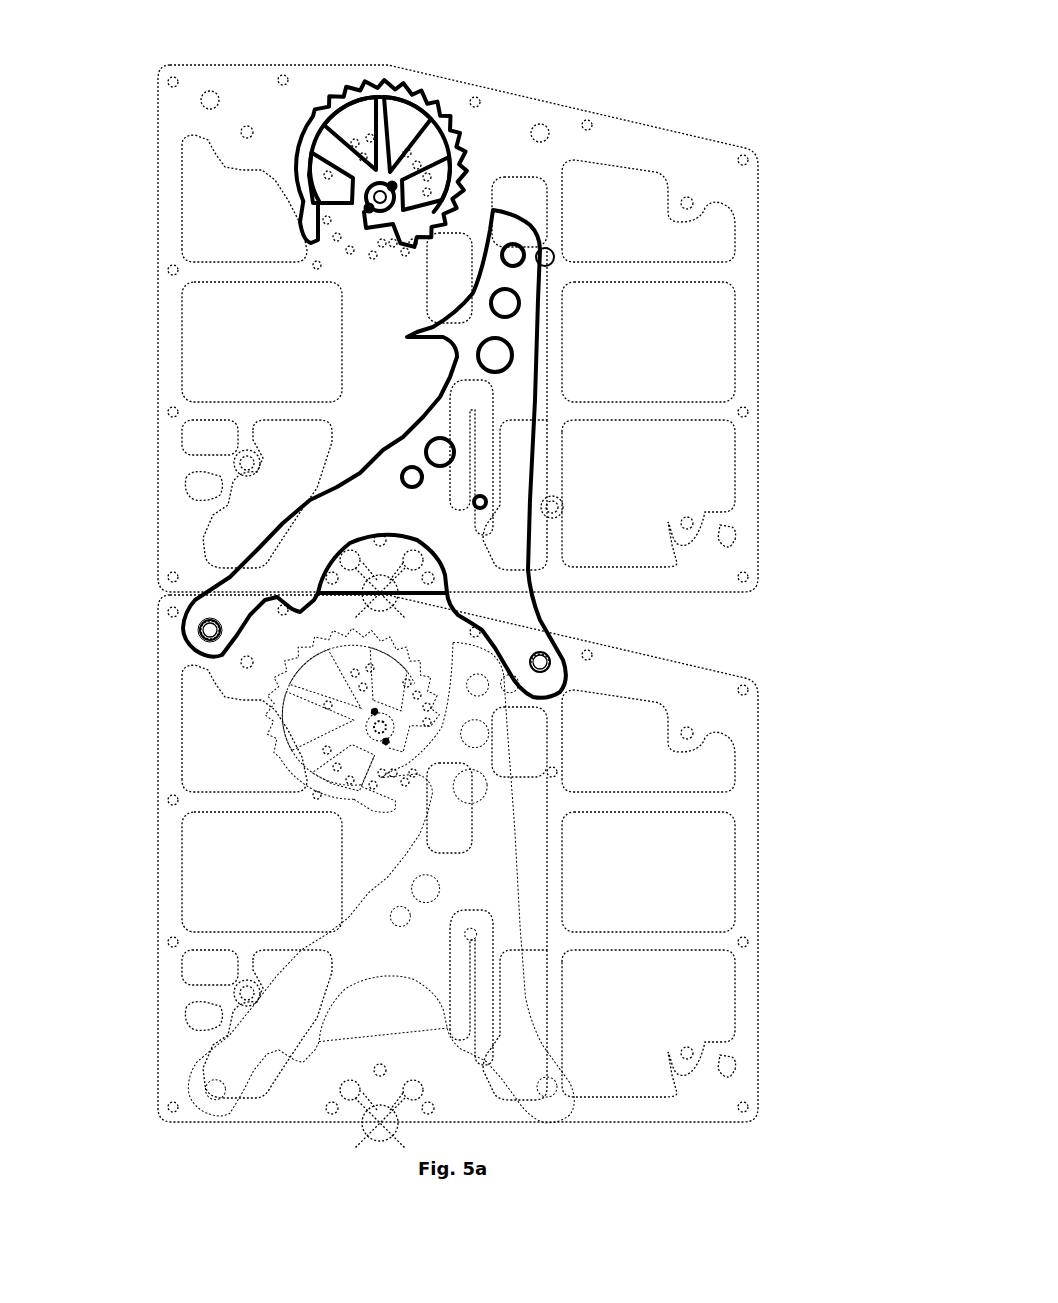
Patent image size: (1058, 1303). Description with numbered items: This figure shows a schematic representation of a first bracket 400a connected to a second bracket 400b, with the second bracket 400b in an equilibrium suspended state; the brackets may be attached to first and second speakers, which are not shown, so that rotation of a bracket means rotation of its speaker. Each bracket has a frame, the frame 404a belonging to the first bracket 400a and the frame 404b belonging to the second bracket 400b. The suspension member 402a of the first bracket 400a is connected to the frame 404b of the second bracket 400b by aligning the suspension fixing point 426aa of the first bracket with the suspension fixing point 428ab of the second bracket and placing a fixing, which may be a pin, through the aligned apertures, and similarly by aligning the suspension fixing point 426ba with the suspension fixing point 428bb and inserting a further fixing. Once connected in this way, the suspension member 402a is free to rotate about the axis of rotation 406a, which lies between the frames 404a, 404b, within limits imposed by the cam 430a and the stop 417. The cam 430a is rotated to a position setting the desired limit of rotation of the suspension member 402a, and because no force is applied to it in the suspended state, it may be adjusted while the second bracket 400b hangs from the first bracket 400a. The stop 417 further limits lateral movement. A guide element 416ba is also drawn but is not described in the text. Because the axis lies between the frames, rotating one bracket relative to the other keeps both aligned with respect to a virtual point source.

The first bracket 400a is at (693, 125).
The second bracket 400b is at (715, 693).
The frame of the first bracket 404a is at (728, 192).
The frame of the second bracket 404b is at (723, 763).
The cam 430a is at (277, 165).
The axis of rotation 406a is at (353, 625).
The stop 417 is at (549, 252).
The guide pin 416ba is at (547, 538).
The suspension member 402a is at (223, 602).
The suspension fixing point 426aa is at (173, 670).
The suspension fixing point 428ab is at (175, 672).
The suspension fixing point 426ba is at (542, 702).
The suspension fixing point 428bb is at (540, 703).